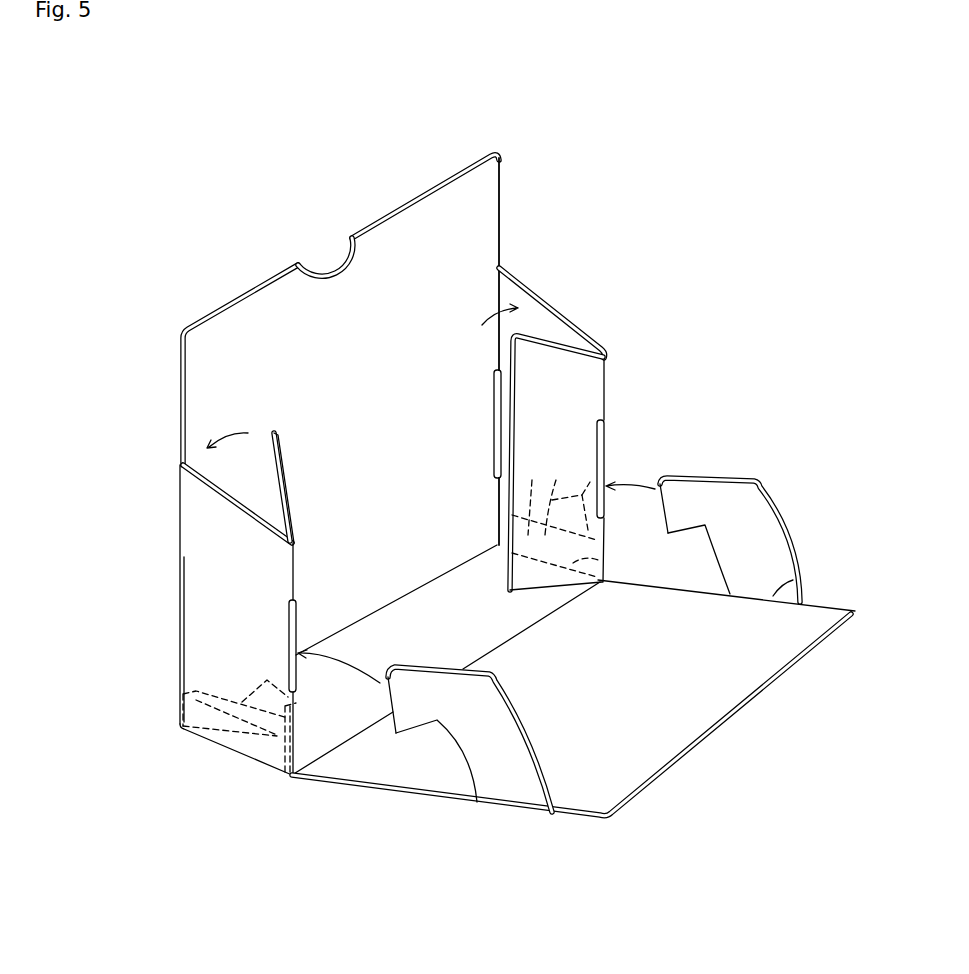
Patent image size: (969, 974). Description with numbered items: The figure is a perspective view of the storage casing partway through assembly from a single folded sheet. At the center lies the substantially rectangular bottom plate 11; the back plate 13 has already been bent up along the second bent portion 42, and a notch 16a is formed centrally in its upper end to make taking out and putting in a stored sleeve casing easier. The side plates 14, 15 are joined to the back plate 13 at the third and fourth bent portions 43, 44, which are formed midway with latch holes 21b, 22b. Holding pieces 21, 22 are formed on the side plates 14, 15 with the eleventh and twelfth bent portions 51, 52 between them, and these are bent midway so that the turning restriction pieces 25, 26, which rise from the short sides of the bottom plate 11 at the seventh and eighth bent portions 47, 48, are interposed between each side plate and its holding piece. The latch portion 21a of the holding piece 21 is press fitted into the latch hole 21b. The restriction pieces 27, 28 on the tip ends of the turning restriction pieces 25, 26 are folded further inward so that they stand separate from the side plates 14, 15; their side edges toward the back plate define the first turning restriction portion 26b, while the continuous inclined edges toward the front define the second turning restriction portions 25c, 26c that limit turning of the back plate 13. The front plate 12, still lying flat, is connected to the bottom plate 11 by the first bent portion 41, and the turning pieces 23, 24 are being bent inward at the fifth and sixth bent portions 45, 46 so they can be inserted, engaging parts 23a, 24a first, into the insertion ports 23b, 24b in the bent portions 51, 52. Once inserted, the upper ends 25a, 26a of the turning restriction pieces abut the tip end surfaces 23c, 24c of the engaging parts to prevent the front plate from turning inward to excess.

The bottom plate 11 is at (402, 620).
The front plate 12 is at (660, 742).
The back plate 13 is at (378, 253).
The side plate 14 is at (547, 302).
The side plate 15 is at (214, 489).
The notch 16a is at (307, 263).
The holding piece 21 is at (568, 345).
The latch portion 21a is at (497, 490).
The latch hole 21b is at (496, 390).
The holding piece 22 is at (288, 478).
The latch hole 22b is at (178, 583).
The turning piece 23 is at (757, 525).
The engaging part 23a is at (680, 483).
The insertion port 23b is at (606, 427).
The tip end surface 23c is at (659, 500).
The turning piece 24 is at (490, 790).
The engaging part 24a is at (397, 733).
The insertion port 24b is at (296, 608).
The tip end surface 24c is at (390, 708).
The turning restriction piece 25 is at (532, 495).
The upper end 25a is at (569, 491).
The second turning restriction portion 25c is at (602, 532).
The turning restriction piece 26 is at (210, 735).
The upper end 26a is at (230, 697).
The first turning restriction portion 26b is at (233, 680).
The second turning restriction portion 26c is at (293, 780).
The restriction piece 27 is at (600, 470).
The restriction piece 28 is at (272, 690).
The first bent portion 41 is at (520, 634).
The second bent portion 42 is at (425, 588).
The third bent portion 43 is at (497, 296).
The fourth bent portion 44 is at (178, 536).
The fifth bent portion 45 is at (794, 580).
The sixth bent portion 46 is at (520, 810).
The seventh bent portion 47 is at (602, 555).
The eighth bent portion 48 is at (262, 765).
The eleventh bent portion 51 is at (607, 383).
The twelfth bent portion 52 is at (292, 563).